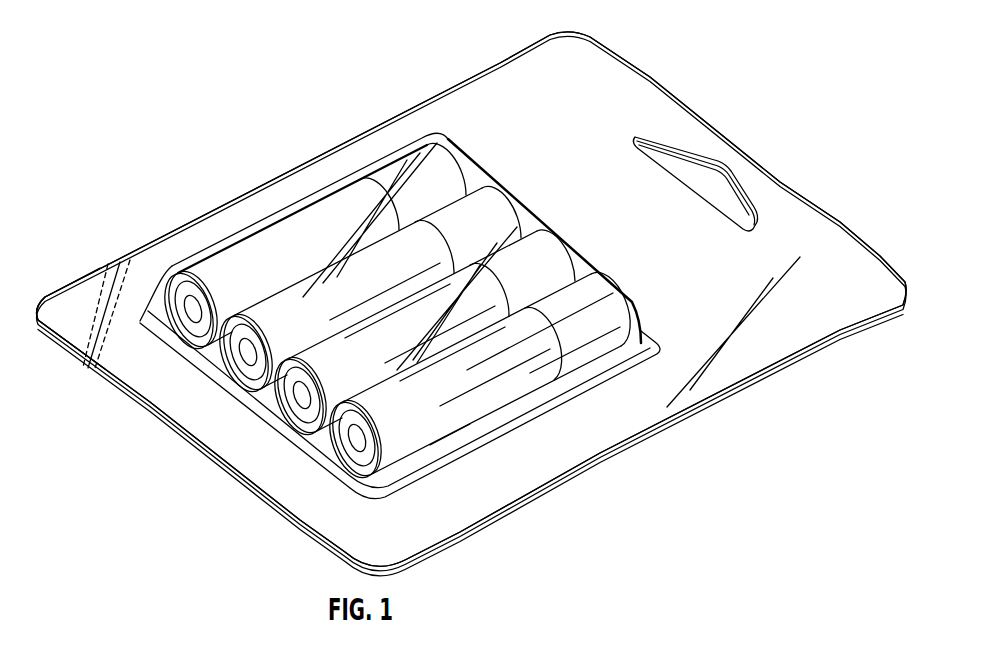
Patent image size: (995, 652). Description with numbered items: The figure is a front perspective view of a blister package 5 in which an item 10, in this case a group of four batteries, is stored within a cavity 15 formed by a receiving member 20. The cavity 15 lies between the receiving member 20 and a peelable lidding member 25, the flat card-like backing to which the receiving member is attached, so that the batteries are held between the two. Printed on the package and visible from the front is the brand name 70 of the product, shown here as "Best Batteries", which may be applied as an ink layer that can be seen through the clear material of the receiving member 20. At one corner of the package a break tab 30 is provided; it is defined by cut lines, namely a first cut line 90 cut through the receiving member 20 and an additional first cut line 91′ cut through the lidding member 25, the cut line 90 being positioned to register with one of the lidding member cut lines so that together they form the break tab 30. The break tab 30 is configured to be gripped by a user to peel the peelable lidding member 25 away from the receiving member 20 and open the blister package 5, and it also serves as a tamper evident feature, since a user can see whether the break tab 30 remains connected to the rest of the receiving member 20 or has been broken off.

The blister package 5 is at (311, 62).
The item 10 is at (281, 256).
The cavity 15 is at (478, 186).
The receiving member 20 is at (157, 262).
The peelable lidding member 25 is at (153, 418).
The break tab 30 is at (82, 298).
The brand name 70 is at (611, 126).
The first cut line 90 is at (94, 343).
The additional first cut line 91′ is at (131, 259).